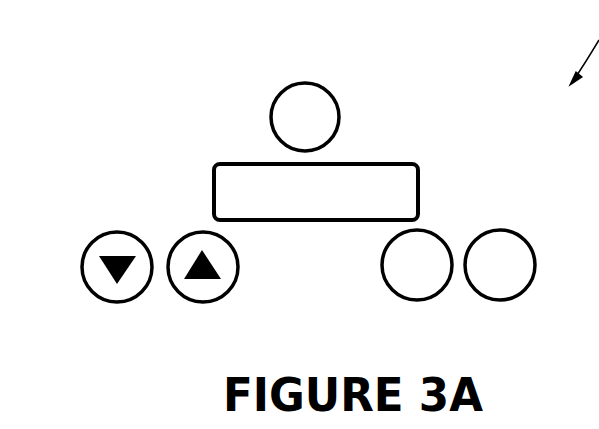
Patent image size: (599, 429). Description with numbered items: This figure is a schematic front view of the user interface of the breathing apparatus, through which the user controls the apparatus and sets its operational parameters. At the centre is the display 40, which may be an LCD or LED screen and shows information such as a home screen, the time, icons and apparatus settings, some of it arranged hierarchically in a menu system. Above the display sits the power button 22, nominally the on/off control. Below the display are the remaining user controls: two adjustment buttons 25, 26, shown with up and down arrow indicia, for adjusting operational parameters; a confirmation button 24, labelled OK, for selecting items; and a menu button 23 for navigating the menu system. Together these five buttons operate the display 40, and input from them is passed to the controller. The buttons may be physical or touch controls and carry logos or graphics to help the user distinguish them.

The power button 22 is at (276, 92).
The display 40 is at (380, 183).
The adjustment button 26 is at (95, 241).
The adjustment button 25 is at (181, 236).
The confirmation button 24 is at (431, 233).
The menu button 23 is at (523, 234).